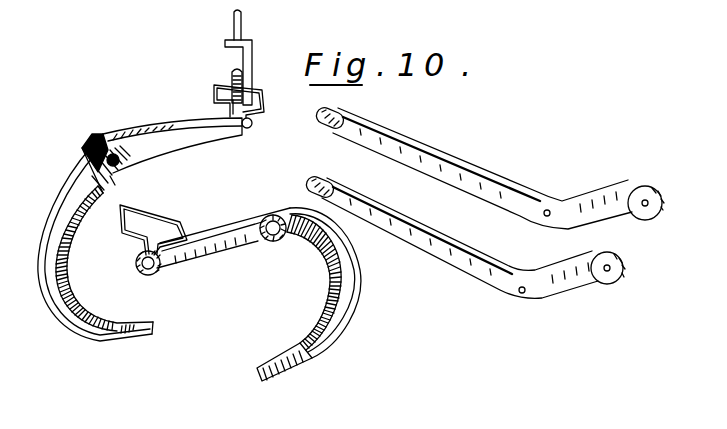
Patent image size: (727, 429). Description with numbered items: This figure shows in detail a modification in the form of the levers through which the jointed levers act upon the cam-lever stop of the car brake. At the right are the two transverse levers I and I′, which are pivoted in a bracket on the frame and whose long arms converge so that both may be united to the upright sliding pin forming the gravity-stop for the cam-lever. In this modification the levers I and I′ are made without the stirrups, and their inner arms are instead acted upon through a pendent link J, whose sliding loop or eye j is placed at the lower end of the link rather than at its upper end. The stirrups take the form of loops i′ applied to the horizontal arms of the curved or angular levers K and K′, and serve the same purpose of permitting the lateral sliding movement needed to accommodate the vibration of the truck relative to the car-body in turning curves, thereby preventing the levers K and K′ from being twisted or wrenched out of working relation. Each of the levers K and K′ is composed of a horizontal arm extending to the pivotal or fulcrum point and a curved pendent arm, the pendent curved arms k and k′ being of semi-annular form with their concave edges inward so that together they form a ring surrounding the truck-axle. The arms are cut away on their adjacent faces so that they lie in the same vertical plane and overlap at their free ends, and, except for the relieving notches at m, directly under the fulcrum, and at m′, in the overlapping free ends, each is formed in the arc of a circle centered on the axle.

The pendent link J is at (262, 16).
The loop or eye j is at (229, 82).
The loop i′ is at (192, 162).
The angular lever K′ is at (167, 145).
The pendent curved arm k′ is at (95, 243).
The angular lever K is at (213, 239).
The pendent curved arm k is at (327, 283).
The relieving notch m is at (283, 241).
The relieving notch m′ is at (216, 342).
The transverse lever I is at (489, 167).
The transverse lever I′ is at (464, 236).